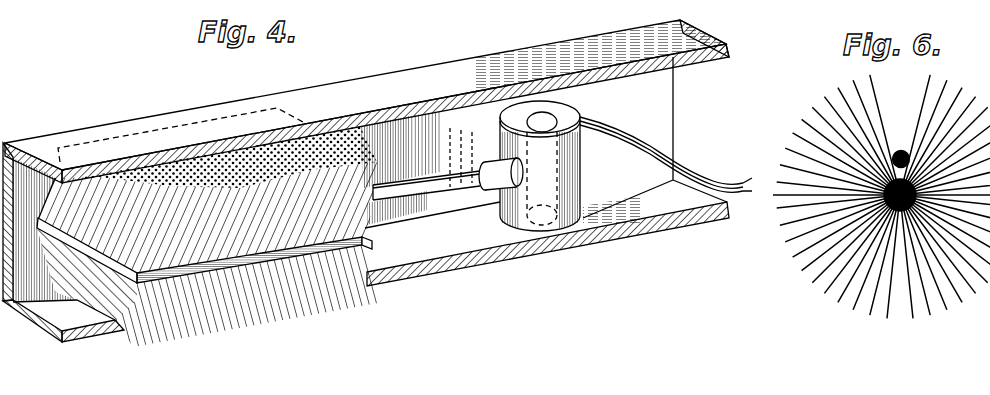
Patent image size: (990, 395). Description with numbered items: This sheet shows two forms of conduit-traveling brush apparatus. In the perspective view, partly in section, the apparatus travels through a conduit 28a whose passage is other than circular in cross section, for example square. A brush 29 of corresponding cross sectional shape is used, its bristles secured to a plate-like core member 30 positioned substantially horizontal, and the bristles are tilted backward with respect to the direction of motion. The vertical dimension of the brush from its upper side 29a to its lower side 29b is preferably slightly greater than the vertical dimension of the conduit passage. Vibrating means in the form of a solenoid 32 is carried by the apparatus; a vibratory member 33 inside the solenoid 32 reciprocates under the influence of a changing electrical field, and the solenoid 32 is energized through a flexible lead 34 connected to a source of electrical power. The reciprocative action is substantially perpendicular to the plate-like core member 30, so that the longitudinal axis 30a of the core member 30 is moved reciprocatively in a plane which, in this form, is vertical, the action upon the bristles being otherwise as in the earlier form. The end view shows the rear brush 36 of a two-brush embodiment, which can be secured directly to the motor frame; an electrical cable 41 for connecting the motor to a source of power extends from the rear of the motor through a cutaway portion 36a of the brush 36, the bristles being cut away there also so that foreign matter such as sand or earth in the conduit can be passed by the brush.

In FIG. 4, the conduit 28a is at (45, 333).
In FIG. 4, the brush 29 is at (300, 322).
In FIG. 4, the upper side of brush 29a is at (321, 142).
In FIG. 4, the lower side of brush 29b is at (352, 313).
In FIG. 4, the plate-like core member 30 is at (364, 240).
In FIG. 4, the longitudinal axis of brush core member 30a is at (450, 190).
In FIG. 4, the solenoid 32 is at (521, 233).
In FIG. 4, the vibratory member 33 is at (515, 103).
In FIG. 4, the flexible lead 34 is at (640, 142).
In FIG. 6, the rear brush 36 is at (830, 108).
In FIG. 6, the cutaway portion 36a is at (906, 99).
In FIG. 6, the electrical cable 41 is at (903, 150).